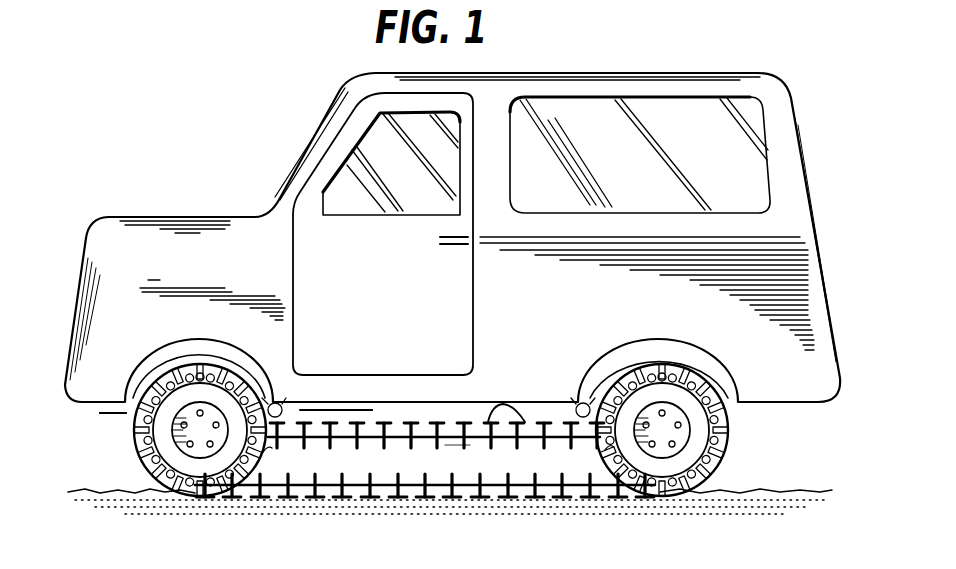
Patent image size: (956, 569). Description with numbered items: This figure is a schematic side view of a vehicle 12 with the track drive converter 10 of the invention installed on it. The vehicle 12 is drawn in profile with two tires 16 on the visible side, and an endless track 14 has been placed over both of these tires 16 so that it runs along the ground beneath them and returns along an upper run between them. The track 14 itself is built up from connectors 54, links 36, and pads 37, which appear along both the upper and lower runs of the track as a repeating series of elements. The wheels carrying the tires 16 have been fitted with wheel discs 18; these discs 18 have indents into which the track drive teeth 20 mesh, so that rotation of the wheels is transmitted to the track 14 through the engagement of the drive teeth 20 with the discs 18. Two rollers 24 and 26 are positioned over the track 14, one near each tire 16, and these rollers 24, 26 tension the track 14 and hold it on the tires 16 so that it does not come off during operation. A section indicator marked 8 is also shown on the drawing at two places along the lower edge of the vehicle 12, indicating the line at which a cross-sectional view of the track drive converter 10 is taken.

The section line 8- 8 is at (110, 402).
The track drive converter 10 is at (452, 313).
The vehicle 12 is at (586, 303).
The track 14 is at (425, 459).
The tires 16 is at (263, 453).
The wheel discs 18 is at (172, 442).
The track drive teeth 20 is at (394, 442).
The roller 24 is at (268, 400).
The roller 26 is at (580, 402).
The links 36 is at (283, 505).
The pads 37 is at (512, 402).
The connectors 54 is at (458, 442).